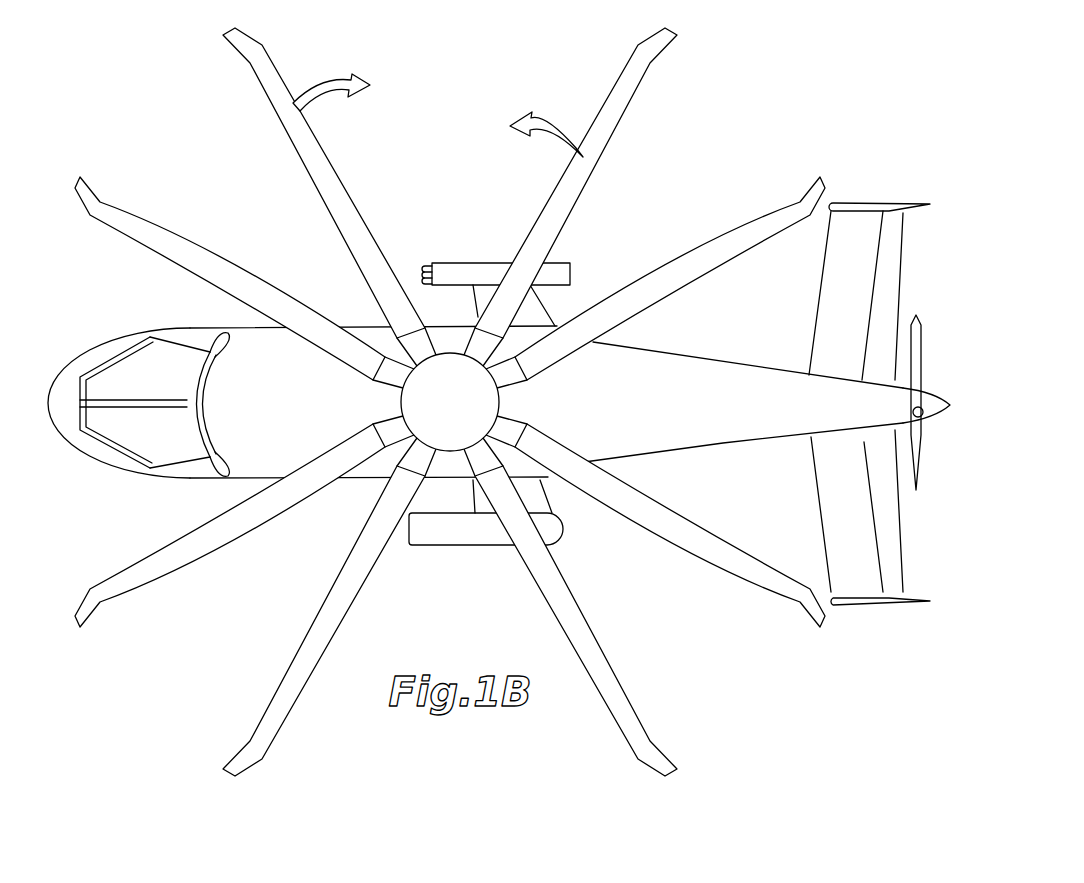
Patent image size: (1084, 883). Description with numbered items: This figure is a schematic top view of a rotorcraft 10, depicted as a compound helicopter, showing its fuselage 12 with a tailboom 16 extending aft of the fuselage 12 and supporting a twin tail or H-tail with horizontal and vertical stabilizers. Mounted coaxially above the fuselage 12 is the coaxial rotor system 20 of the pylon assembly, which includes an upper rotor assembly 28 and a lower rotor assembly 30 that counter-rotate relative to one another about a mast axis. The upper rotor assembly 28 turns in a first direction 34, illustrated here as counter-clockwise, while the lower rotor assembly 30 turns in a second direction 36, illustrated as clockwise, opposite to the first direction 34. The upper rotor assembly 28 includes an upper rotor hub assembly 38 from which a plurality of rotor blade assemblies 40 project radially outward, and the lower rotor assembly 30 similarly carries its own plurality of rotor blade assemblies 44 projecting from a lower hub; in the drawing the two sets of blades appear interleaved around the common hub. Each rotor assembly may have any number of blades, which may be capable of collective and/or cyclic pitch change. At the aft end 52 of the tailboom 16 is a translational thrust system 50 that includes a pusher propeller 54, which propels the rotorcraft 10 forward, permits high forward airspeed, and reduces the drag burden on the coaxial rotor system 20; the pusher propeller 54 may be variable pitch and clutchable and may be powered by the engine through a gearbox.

The rotorcraft 10 is at (500, 390).
The fuselage 12 is at (374, 476).
The tailboom 16 is at (715, 372).
The coaxial rotor system 20 is at (450, 402).
The upper rotor assembly 28 is at (404, 402).
The lower rotor assembly 30 is at (469, 458).
The first direction 34 is at (552, 118).
The second direction 36 is at (320, 85).
The upper rotor hub assembly 38 is at (399, 402).
The rotor blade assemblies 40 is at (116, 214).
The rotor blade assemblies 44 is at (253, 72).
The translational thrust system 50 is at (930, 492).
The aft end 52 is at (903, 401).
The pusher propeller 54 is at (930, 397).